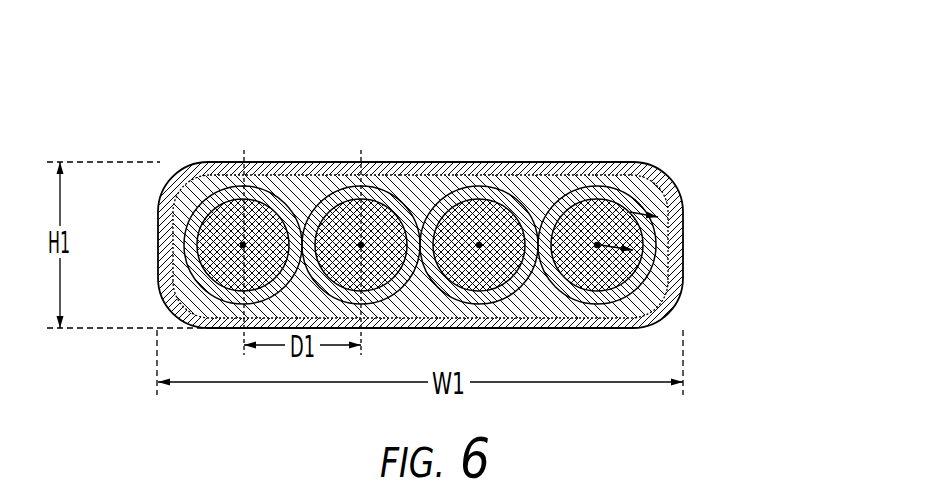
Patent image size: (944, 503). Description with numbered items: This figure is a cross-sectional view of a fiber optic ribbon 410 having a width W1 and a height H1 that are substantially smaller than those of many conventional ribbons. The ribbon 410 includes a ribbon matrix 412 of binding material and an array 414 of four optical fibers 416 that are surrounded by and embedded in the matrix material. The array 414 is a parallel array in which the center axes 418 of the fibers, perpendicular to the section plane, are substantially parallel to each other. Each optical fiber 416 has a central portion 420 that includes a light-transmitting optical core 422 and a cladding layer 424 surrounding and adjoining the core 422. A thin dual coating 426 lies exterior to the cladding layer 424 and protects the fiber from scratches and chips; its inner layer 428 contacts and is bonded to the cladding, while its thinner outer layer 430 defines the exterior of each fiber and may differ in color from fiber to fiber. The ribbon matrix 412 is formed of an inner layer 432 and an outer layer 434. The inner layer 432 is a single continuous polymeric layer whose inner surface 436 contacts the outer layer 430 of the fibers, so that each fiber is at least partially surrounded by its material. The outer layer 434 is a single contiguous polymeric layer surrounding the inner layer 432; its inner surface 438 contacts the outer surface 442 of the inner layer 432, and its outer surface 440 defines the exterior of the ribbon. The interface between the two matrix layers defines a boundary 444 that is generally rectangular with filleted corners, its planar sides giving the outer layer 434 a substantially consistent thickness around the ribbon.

The fiber optic ribbon 410 is at (433, 247).
The ribbon matrix 412 is at (600, 148).
The array of optical fibers 414 is at (178, 243).
The optical fibers 416 is at (242, 225).
The center axes 418 is at (210, 285).
The central portion 420 is at (423, 247).
The optical core 422 is at (560, 305).
The cladding layer 424 is at (593, 322).
The coating 426 is at (676, 300).
The inner layer of coating 428 is at (674, 212).
The outer layer of coating 430 is at (661, 240).
The inner layer of ribbon matrix 432 is at (420, 193).
The outer layer of ribbon matrix 434 is at (458, 175).
The inner surface of inner layer 436 is at (526, 197).
The inner surface of outer layer 438 is at (292, 170).
The outer surface of outer layer 440 is at (246, 158).
The outer surface of inner layer 442 is at (447, 187).
The boundary 444 is at (348, 167).